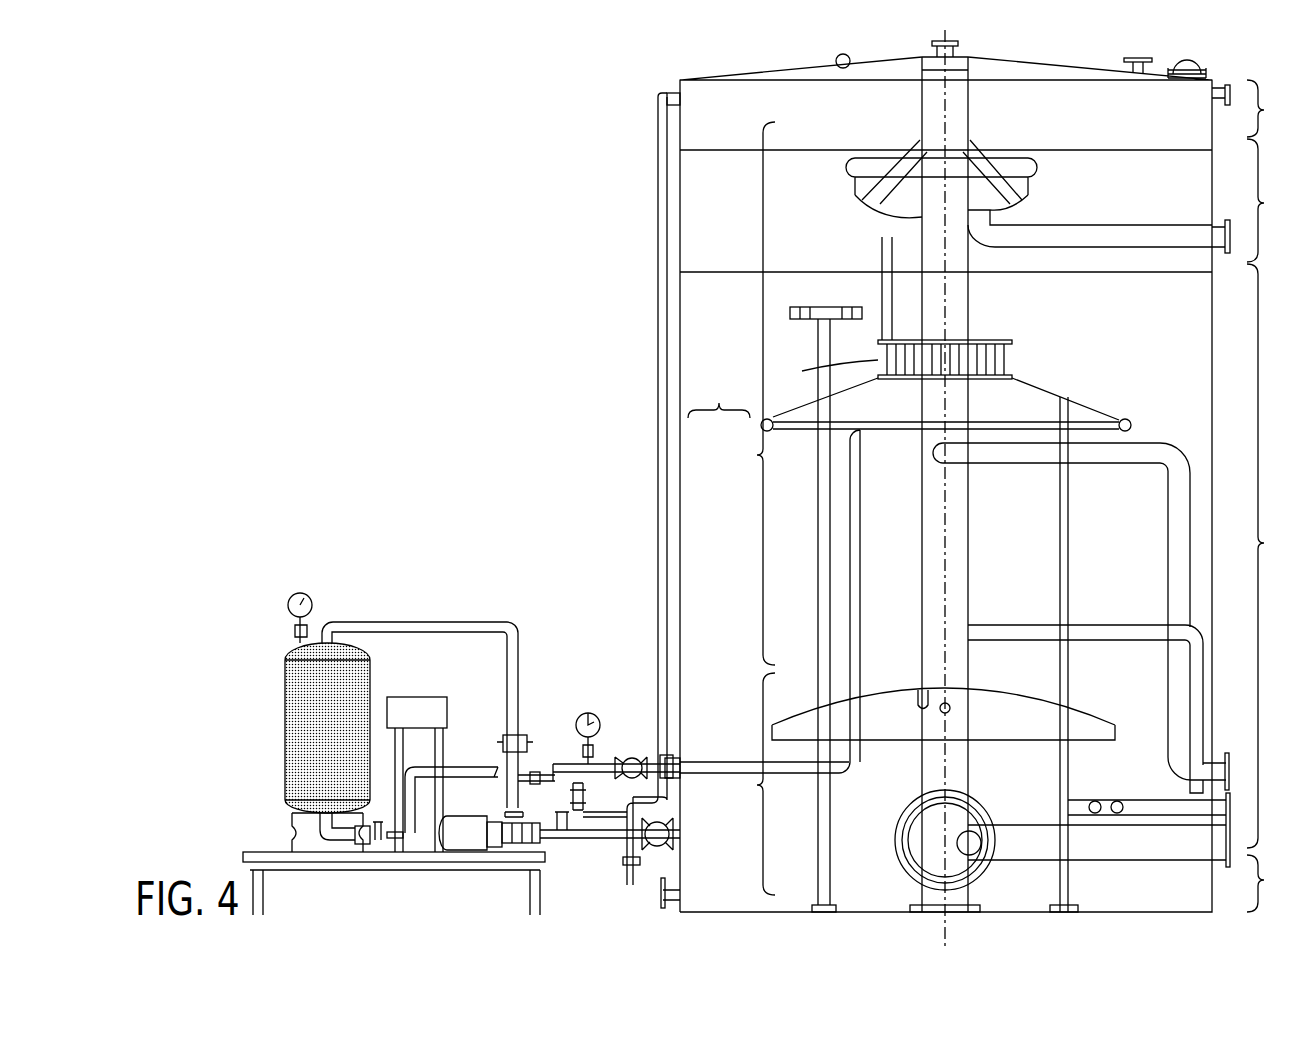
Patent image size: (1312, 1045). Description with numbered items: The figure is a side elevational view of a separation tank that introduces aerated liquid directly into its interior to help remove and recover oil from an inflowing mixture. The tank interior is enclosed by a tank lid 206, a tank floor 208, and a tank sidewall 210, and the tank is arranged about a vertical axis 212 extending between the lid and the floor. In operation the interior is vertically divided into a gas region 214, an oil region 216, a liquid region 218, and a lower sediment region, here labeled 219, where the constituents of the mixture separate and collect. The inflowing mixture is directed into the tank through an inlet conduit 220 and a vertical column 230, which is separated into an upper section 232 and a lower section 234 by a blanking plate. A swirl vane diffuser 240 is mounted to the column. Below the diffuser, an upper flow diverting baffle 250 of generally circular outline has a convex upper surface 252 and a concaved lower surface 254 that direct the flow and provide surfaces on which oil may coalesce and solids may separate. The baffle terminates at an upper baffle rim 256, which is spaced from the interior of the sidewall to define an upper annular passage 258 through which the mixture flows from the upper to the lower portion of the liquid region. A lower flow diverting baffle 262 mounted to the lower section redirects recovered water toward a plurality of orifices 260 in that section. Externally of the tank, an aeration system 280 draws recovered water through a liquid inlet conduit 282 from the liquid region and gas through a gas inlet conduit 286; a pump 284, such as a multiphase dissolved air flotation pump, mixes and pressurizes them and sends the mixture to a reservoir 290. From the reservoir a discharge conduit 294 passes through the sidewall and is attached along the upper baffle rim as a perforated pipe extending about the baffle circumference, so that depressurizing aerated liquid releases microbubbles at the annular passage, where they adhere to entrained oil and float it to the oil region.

The tank lid 206 is at (846, 68).
The tank floor 208 is at (862, 915).
The tank sidewall 210 is at (680, 363).
The vertical axis 212 is at (960, 44).
The gas region 214 is at (1274, 108).
The oil region 216 is at (1274, 200).
The liquid region 218 is at (1274, 556).
The bottom tank section 219 is at (1274, 883).
The inlet conduit 220 is at (1168, 555).
The vertical column 230 is at (968, 292).
The upper section 232 is at (746, 393).
The lower section 234 is at (746, 784).
The swirl vane diffuser 240 is at (1012, 366).
The upper flow diverting baffle 250 is at (1095, 400).
The convex upper surface 252 is at (803, 388).
The concaved lower surface 254 is at (902, 433).
The upper baffle rim 256 is at (1130, 420).
The upper annular passage 258 is at (719, 391).
The orifices 260 is at (923, 708).
The lower flow diverting baffle 262 is at (1115, 725).
The aeration system 280 is at (451, 711).
The liquid inlet conduit 282 is at (604, 840).
The pump 284 is at (467, 847).
The gas inlet conduit 286 is at (658, 640).
The reservoir 290 is at (290, 745).
The discharge conduit 294 is at (850, 608).